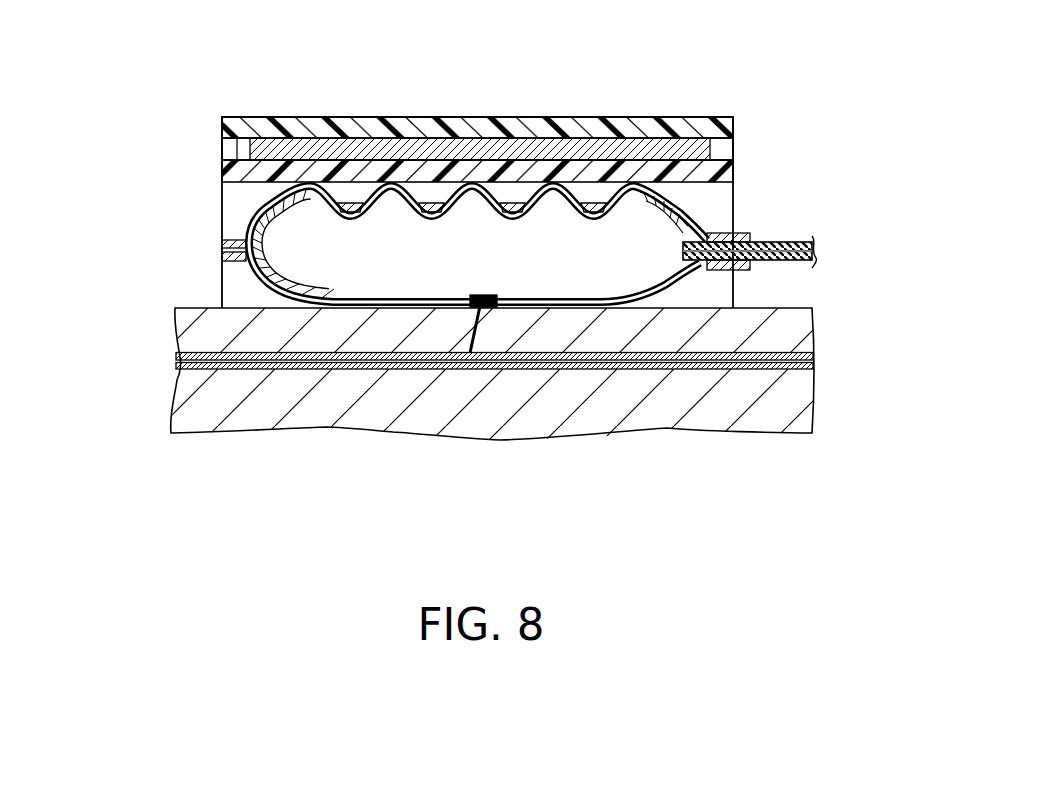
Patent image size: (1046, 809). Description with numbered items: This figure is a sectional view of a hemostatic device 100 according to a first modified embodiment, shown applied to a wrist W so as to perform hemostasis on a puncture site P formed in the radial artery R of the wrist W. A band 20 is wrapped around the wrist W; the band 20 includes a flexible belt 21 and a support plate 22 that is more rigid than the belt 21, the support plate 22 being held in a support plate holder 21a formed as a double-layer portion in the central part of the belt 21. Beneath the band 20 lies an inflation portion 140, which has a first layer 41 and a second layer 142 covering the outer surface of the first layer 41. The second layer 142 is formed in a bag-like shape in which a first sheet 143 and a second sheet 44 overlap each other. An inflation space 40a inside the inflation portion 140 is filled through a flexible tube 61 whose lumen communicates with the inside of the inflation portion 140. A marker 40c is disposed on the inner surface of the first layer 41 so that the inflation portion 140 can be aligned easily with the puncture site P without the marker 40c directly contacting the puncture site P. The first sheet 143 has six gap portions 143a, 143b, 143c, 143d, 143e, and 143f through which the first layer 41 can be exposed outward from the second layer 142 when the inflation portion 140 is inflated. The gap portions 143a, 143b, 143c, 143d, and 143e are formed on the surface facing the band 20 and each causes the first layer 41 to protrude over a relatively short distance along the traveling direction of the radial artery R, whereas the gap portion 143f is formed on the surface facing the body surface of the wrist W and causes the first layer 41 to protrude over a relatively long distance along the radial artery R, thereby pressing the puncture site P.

The band 20 is at (474, 94).
The belt 21 is at (233, 128).
The support plate holder 21a is at (535, 128).
The support plate 22 is at (282, 128).
The inflation space 40a is at (662, 230).
The marker 40c is at (470, 302).
The first layer 41 is at (280, 196).
The second sheet 44 is at (208, 272).
The tube 61 is at (802, 262).
The hemostatic device 100 is at (753, 208).
The inflation portion 140 is at (378, 244).
The second layer 142 is at (400, 244).
The first sheet 143 is at (431, 244).
The gap portion 143a is at (338, 188).
The gap portion 143b is at (420, 188).
The gap portion 143c is at (498, 188).
The gap portion 143d is at (583, 188).
The gap portion 143e is at (657, 190).
The gap portion 143f is at (285, 300).
The puncture site P is at (476, 303).
The radial artery R is at (700, 370).
The wrist W is at (776, 416).